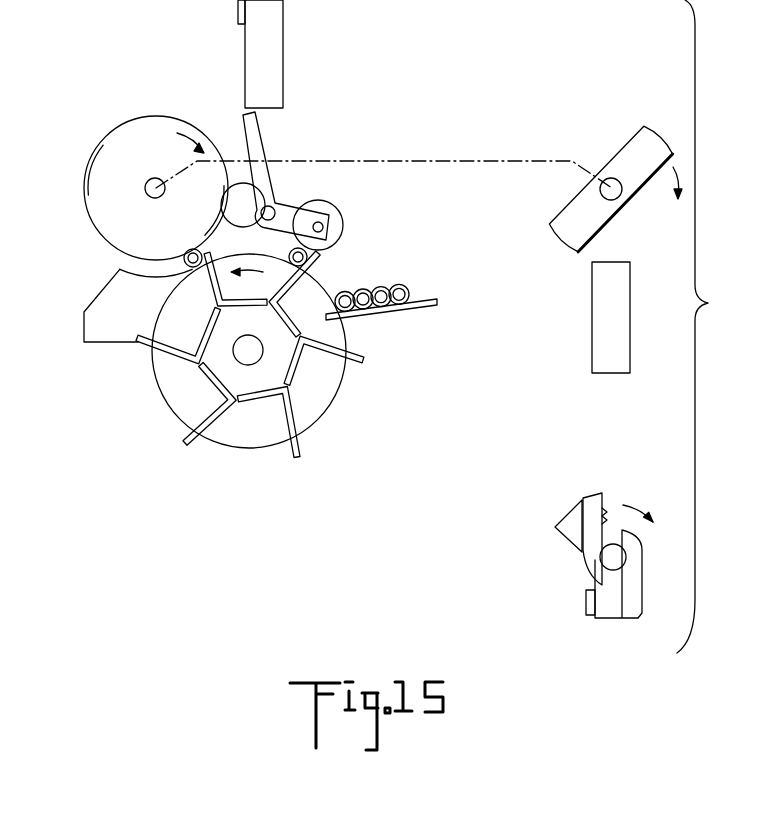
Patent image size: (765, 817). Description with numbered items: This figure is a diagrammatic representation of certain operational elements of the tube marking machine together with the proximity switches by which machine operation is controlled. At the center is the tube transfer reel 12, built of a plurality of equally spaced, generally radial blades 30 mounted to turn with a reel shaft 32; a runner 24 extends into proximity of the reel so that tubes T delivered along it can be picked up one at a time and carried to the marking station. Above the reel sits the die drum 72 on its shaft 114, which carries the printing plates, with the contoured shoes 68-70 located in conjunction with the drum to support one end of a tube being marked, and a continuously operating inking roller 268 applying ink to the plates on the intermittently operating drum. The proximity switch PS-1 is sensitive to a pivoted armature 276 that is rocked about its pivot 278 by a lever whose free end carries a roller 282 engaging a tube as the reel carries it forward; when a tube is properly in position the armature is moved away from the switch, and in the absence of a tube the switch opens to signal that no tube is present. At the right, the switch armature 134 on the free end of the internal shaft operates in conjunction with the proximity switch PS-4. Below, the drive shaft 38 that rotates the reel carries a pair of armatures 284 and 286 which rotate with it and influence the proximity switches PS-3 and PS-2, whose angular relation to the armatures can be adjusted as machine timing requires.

The proximity switch PS-1 is at (284, 26).
The die drum 72 is at (88, 225).
The internal shaft 114 is at (149, 194).
The contoured shoes 68-70 is at (112, 290).
The pivoted armature 276 is at (252, 120).
The inking roller 268 is at (237, 213).
The pivot 278 is at (274, 212).
The roller 282 is at (342, 215).
The tube transfer reel 12 is at (160, 403).
The reel shaft 32 is at (250, 337).
The radial blades 30 is at (203, 284).
The runner 24 is at (430, 302).
The tubes T is at (378, 285).
The switch armature 134 is at (565, 210).
The proximity switch PS-4 is at (597, 307).
The armature 284 is at (592, 495).
The proximity switch PS-3 is at (562, 528).
The drive shaft 38 is at (610, 553).
The armature 286 is at (642, 575).
The proximity switch PS-2 is at (610, 620).